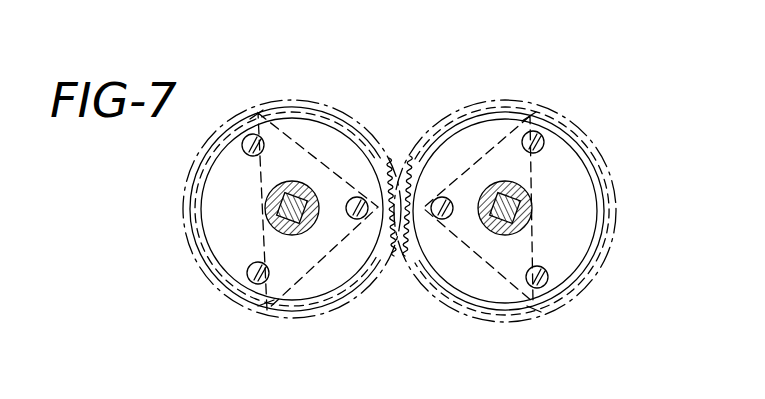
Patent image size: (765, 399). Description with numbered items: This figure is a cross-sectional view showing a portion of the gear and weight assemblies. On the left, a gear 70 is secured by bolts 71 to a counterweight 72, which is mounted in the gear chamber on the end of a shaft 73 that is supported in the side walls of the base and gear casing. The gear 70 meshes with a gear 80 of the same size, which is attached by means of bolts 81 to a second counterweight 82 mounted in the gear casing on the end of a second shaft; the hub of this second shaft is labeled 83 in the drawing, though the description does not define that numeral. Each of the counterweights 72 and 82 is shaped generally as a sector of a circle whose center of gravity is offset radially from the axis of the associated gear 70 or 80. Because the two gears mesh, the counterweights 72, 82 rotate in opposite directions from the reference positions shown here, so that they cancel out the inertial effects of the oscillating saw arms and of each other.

The gear 70 is at (340, 303).
The bolts 71 is at (248, 137).
The counterweight 72 is at (328, 162).
The shaft 73 is at (266, 213).
The gear 80 is at (512, 318).
The bolts 81 is at (545, 140).
The second counterweight 82 is at (492, 155).
The hub 83 is at (531, 205).